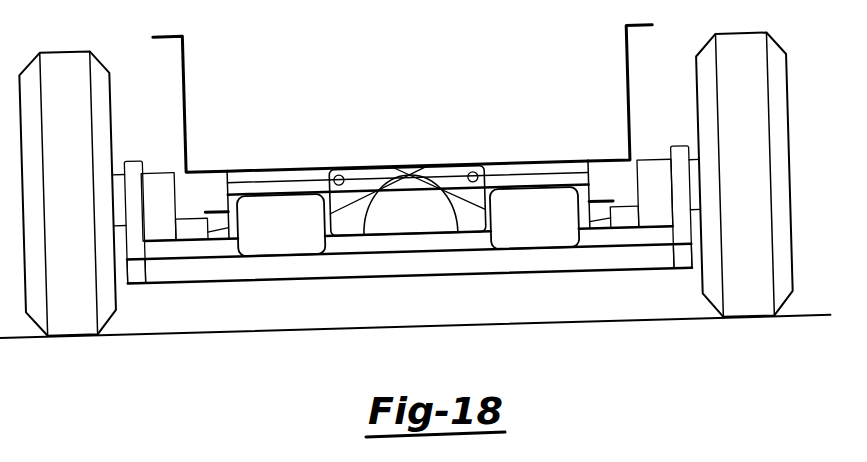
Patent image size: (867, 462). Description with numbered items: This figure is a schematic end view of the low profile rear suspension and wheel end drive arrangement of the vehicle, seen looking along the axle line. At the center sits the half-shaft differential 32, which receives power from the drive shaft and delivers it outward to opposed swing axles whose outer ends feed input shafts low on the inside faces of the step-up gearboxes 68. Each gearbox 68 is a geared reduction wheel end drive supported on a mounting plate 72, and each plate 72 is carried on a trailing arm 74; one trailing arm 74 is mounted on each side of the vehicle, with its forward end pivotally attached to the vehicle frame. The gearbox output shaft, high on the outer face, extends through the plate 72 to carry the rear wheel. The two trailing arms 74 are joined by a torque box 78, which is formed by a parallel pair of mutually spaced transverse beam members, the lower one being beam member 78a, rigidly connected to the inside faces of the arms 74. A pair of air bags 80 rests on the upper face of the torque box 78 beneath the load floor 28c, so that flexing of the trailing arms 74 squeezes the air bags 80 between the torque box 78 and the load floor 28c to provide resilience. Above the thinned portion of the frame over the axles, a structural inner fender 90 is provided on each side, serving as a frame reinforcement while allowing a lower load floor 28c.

The load floor 28c is at (240, 170).
The half-shaft differential 32 is at (409, 195).
The step-up gearbox 68 is at (157, 183).
The mounting plate 72 is at (128, 160).
The trailing arm 74 is at (137, 277).
The torque box 78 is at (247, 282).
The transverse beam member 78a is at (375, 270).
The air bag 80 is at (283, 217).
The structural inner fender 90 is at (183, 90).